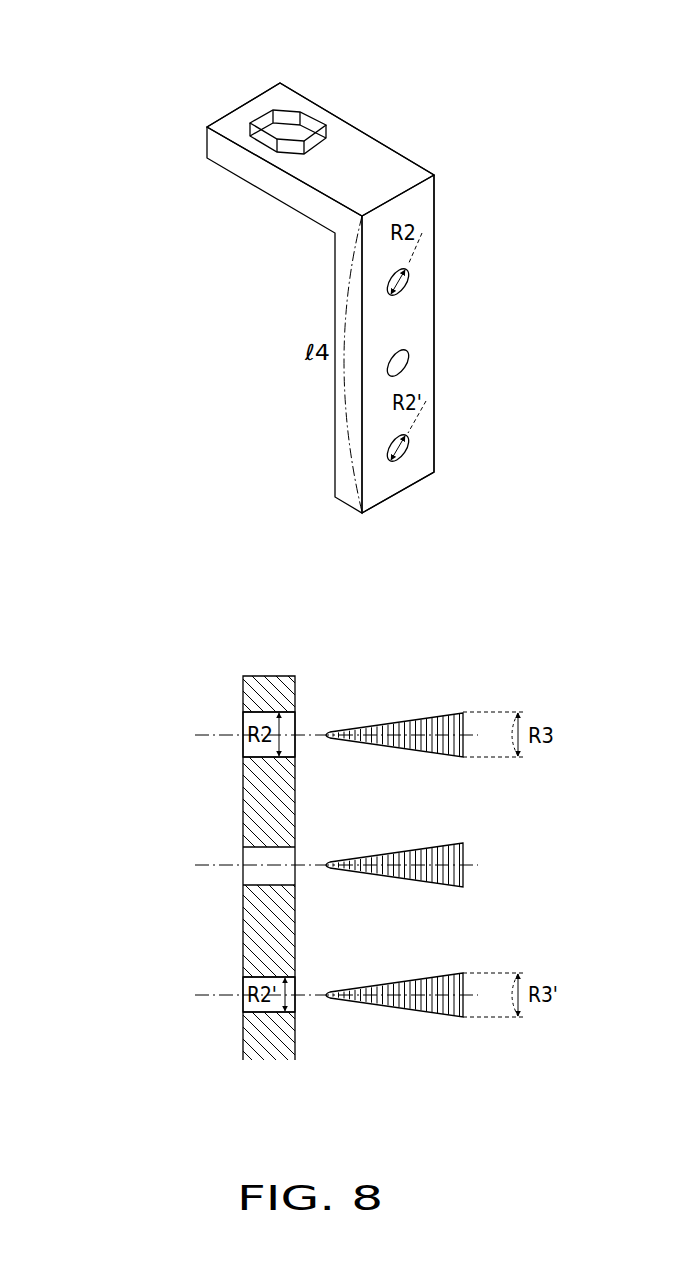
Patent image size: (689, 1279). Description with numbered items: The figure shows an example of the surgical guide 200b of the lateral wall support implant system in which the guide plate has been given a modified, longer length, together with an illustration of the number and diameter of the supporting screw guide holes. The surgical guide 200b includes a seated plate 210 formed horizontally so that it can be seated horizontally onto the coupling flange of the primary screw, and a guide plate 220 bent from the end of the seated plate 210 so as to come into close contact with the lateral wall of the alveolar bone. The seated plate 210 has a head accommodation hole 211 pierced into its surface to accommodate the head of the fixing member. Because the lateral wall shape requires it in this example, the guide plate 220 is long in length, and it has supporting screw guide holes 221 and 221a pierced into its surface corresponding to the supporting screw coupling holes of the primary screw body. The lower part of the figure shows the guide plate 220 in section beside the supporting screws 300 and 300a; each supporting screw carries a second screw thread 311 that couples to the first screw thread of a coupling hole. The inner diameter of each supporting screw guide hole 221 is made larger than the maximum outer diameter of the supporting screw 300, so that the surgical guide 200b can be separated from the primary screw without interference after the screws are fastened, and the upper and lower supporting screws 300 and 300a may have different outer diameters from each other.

The surgical guide 200b is at (134, 130).
The seated plate 210 is at (368, 158).
The head accommodation hole 211 is at (308, 128).
The guide plate 220 is at (422, 212).
The supporting screw guide holes 221 is at (408, 282).
The supporting screw guide hole 221a is at (408, 448).
The supporting screw 300 is at (460, 712).
The supporting screw 300a is at (458, 972).
The second screw thread 311 is at (367, 723).